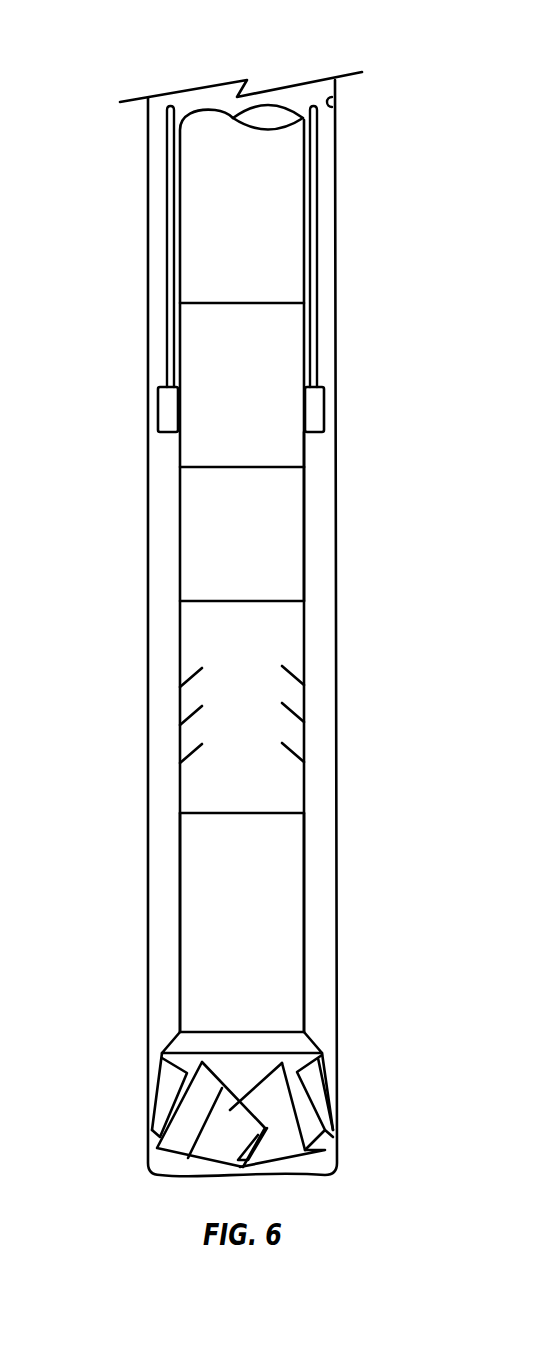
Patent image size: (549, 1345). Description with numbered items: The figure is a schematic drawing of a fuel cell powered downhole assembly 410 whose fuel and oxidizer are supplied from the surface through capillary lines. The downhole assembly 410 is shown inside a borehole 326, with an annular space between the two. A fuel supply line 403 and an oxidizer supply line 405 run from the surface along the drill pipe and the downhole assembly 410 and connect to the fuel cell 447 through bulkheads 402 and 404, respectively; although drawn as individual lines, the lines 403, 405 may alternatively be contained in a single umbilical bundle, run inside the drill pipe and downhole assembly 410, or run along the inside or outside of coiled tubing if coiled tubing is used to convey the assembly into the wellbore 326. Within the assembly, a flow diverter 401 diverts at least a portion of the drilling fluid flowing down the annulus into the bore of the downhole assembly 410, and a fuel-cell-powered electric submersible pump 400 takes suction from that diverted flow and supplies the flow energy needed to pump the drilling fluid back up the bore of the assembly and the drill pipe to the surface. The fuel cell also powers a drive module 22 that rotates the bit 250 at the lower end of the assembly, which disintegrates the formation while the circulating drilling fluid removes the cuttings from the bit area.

The drive module 22 is at (304, 918).
The bit 250 is at (327, 1120).
The borehole 326 is at (336, 99).
The electric submersible pump 400 is at (304, 527).
The flow diverter 401 is at (304, 720).
The bulkhead 402 is at (325, 405).
The fuel supply line 403 is at (318, 203).
The bulkhead 404 is at (157, 415).
The oxidizer supply line 405 is at (165, 190).
The downhole assembly 410 is at (283, 103).
The fuel cell 447 is at (307, 448).